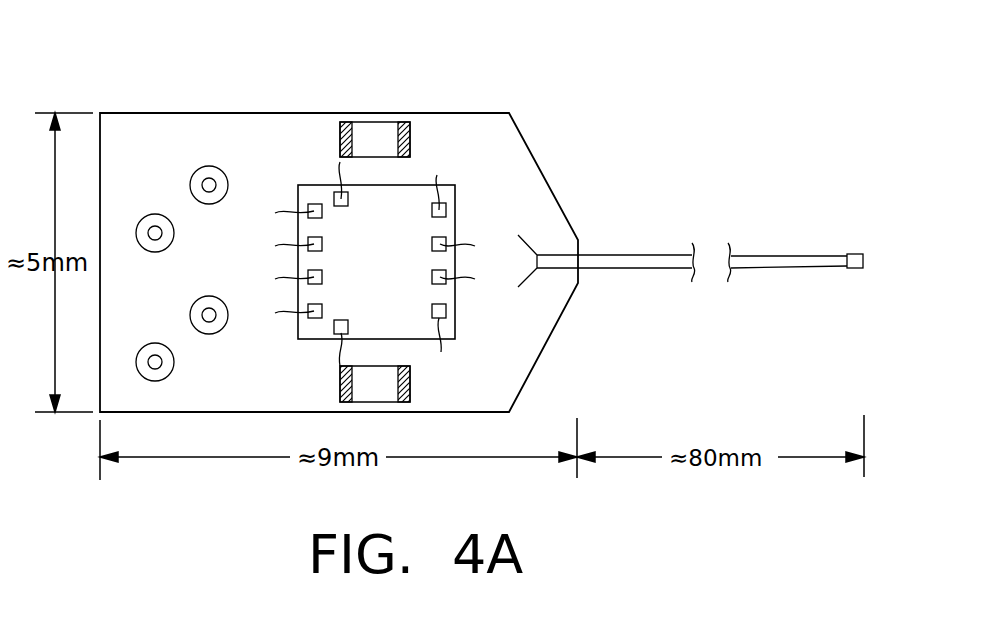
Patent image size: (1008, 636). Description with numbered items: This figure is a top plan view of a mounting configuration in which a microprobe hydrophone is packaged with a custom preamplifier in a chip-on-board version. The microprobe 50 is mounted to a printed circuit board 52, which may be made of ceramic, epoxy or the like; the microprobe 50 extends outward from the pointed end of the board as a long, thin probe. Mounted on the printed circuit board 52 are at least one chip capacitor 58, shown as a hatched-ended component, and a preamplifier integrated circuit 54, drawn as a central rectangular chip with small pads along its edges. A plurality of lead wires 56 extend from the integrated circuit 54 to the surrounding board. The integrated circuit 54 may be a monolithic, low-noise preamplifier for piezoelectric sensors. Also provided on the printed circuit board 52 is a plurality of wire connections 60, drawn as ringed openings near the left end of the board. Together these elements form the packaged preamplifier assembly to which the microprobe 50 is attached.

The microprobe 50 is at (767, 266).
The printed circuit board 52 is at (522, 132).
The preamplifier integrated circuit 54 is at (455, 217).
The lead wires 56 is at (441, 352).
The chip capacitor 58 is at (400, 122).
The wire connections 60 is at (143, 219).